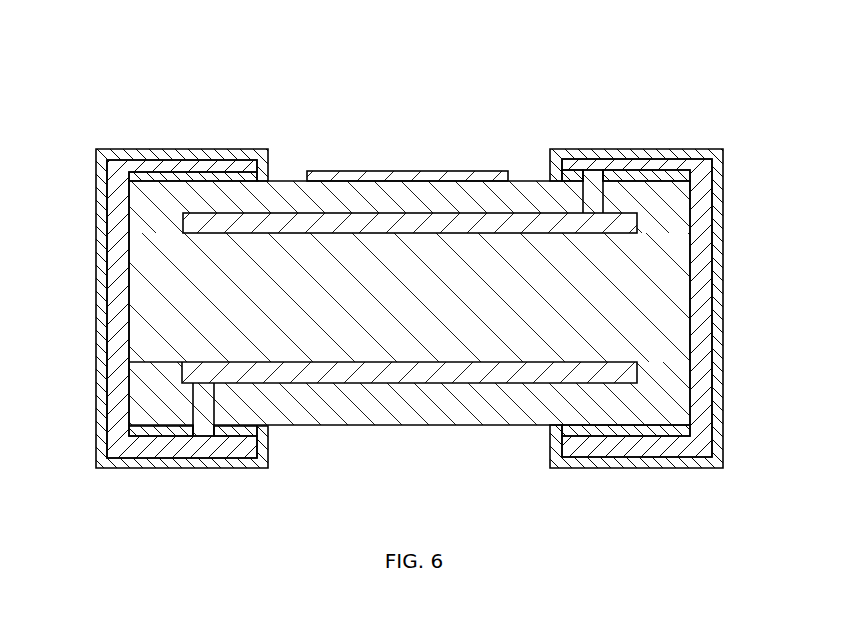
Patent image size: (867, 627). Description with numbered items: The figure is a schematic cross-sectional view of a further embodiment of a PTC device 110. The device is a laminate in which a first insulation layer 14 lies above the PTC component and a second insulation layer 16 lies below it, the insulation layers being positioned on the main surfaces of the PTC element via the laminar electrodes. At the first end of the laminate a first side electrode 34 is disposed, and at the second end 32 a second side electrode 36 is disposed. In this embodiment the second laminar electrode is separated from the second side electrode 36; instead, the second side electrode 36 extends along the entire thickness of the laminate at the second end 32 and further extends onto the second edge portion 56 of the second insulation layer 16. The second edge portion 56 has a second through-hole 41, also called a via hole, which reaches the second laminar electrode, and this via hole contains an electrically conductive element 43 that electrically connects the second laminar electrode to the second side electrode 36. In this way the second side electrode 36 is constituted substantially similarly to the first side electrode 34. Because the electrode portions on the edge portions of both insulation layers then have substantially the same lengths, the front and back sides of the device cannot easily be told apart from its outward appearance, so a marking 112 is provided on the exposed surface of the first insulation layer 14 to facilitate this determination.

The PTC device 110 is at (364, 122).
The marking 112 is at (406, 172).
The first insulation layer 14 is at (527, 197).
The second insulation layer 16 is at (410, 416).
The second end 32 is at (128, 298).
The second side electrode 36 is at (115, 327).
The first side electrode 34 is at (705, 303).
The second through-hole 41 is at (183, 391).
The electrically conductive element 43 is at (205, 397).
The second edge portion 56 is at (268, 425).